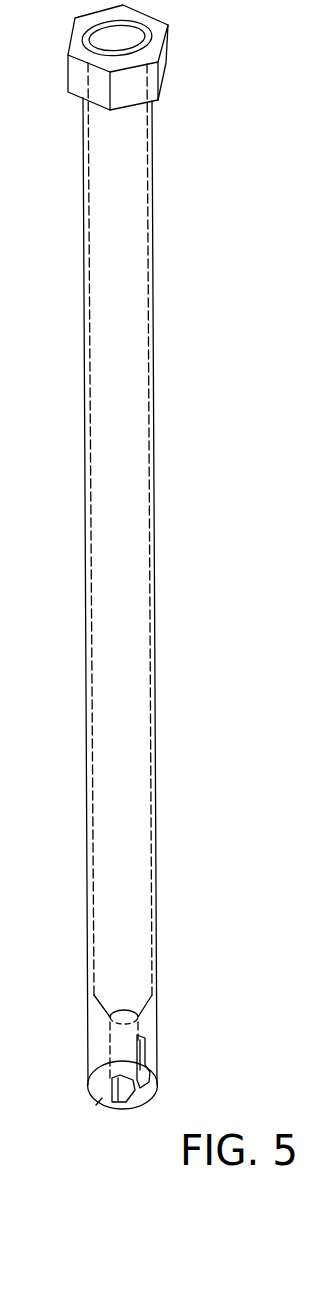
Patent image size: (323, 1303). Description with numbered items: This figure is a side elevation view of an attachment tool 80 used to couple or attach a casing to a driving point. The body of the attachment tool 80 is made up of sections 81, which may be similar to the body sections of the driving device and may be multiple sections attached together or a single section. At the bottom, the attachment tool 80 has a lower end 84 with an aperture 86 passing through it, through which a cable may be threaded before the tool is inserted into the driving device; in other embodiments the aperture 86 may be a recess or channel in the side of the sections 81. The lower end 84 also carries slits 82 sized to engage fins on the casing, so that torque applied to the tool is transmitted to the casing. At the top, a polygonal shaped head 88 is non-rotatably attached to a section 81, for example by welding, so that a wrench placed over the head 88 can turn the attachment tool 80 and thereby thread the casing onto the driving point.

The attachment tool 80 is at (166, 588).
The sections 81 is at (155, 443).
The slits 82 is at (140, 1052).
The lower end 84 is at (145, 1102).
The aperture 86 is at (130, 1100).
The polygonal shaped head 88 is at (176, 51).